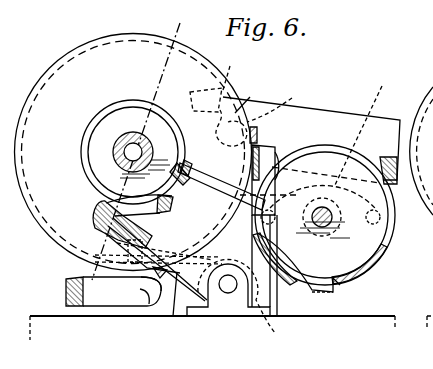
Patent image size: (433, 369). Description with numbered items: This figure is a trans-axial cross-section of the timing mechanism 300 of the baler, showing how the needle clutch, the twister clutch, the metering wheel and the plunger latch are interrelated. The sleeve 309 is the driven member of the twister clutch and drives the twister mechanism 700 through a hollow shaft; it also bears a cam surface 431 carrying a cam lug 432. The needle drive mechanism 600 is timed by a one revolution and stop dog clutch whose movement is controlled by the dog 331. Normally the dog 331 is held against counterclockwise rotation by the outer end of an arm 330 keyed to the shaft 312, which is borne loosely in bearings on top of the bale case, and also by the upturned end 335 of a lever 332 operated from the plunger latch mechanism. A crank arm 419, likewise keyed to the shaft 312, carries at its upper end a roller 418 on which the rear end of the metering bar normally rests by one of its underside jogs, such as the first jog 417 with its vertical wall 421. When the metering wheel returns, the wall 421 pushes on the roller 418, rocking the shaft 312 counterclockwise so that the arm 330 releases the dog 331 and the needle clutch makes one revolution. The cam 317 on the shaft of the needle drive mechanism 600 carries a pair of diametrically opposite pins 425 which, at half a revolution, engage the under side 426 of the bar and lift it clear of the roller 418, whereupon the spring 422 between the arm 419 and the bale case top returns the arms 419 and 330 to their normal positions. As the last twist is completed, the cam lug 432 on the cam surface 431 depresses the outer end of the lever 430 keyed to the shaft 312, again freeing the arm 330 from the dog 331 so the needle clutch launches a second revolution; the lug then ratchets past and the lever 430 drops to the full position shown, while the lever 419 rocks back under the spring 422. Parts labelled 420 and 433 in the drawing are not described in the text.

The timing mechanism 300 is at (133, 151).
The sleeve 309 is at (104, 109).
The twister mechanism 700 is at (113, 157).
The first jog 417 is at (222, 97).
The roller 418 is at (253, 97).
The vertical wall 421 is at (278, 101).
The needle drive mechanism 600 is at (311, 153).
The under side 426 is at (367, 150).
The cam 317 is at (372, 275).
The crank arm 419 is at (260, 235).
The pins 425 is at (318, 202).
The spring 422 is at (300, 288).
The bracket 420 is at (248, 281).
The shaft 312 is at (229, 293).
The cam surface 431 is at (173, 198).
The dog 331 is at (97, 224).
The cam lug 432 is at (135, 218).
The arm 330 is at (181, 271).
The link 433 is at (100, 267).
The lever 332 is at (67, 292).
The upturned end 335 is at (155, 289).
The lever 430 is at (155, 313).